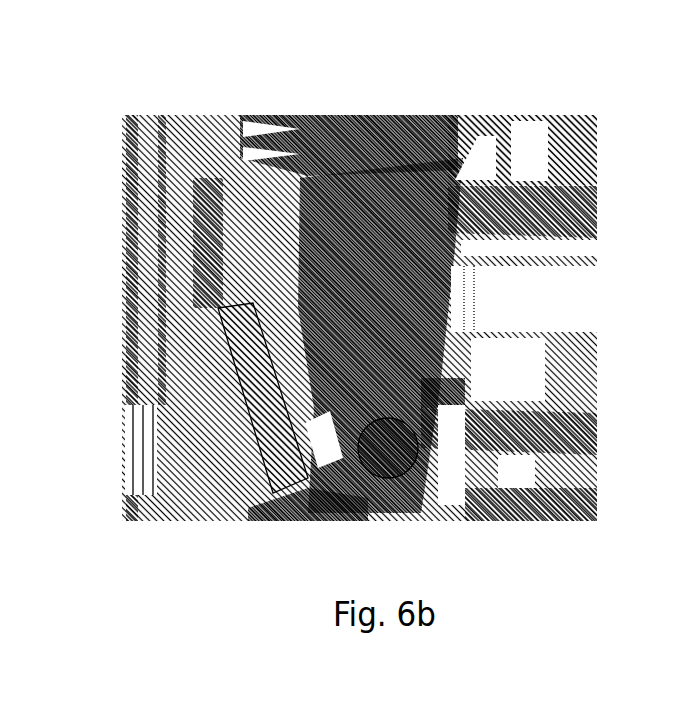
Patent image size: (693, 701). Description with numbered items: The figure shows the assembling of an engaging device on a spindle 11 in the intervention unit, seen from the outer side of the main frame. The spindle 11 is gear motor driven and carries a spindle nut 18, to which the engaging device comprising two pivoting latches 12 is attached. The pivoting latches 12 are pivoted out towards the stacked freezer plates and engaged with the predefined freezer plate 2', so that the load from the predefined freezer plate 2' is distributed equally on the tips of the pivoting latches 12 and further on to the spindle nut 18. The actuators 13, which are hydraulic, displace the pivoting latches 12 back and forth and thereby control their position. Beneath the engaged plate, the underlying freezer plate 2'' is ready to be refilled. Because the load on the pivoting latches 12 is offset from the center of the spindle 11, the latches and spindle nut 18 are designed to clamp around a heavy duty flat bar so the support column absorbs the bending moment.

The spindle 11 is at (310, 127).
The pivoting latches 12 is at (300, 248).
The actuators 13 is at (257, 405).
The spindle nut 18 is at (377, 433).
The predefined freezer plate 2' is at (563, 185).
The underlying freezer plate 2'' is at (553, 429).